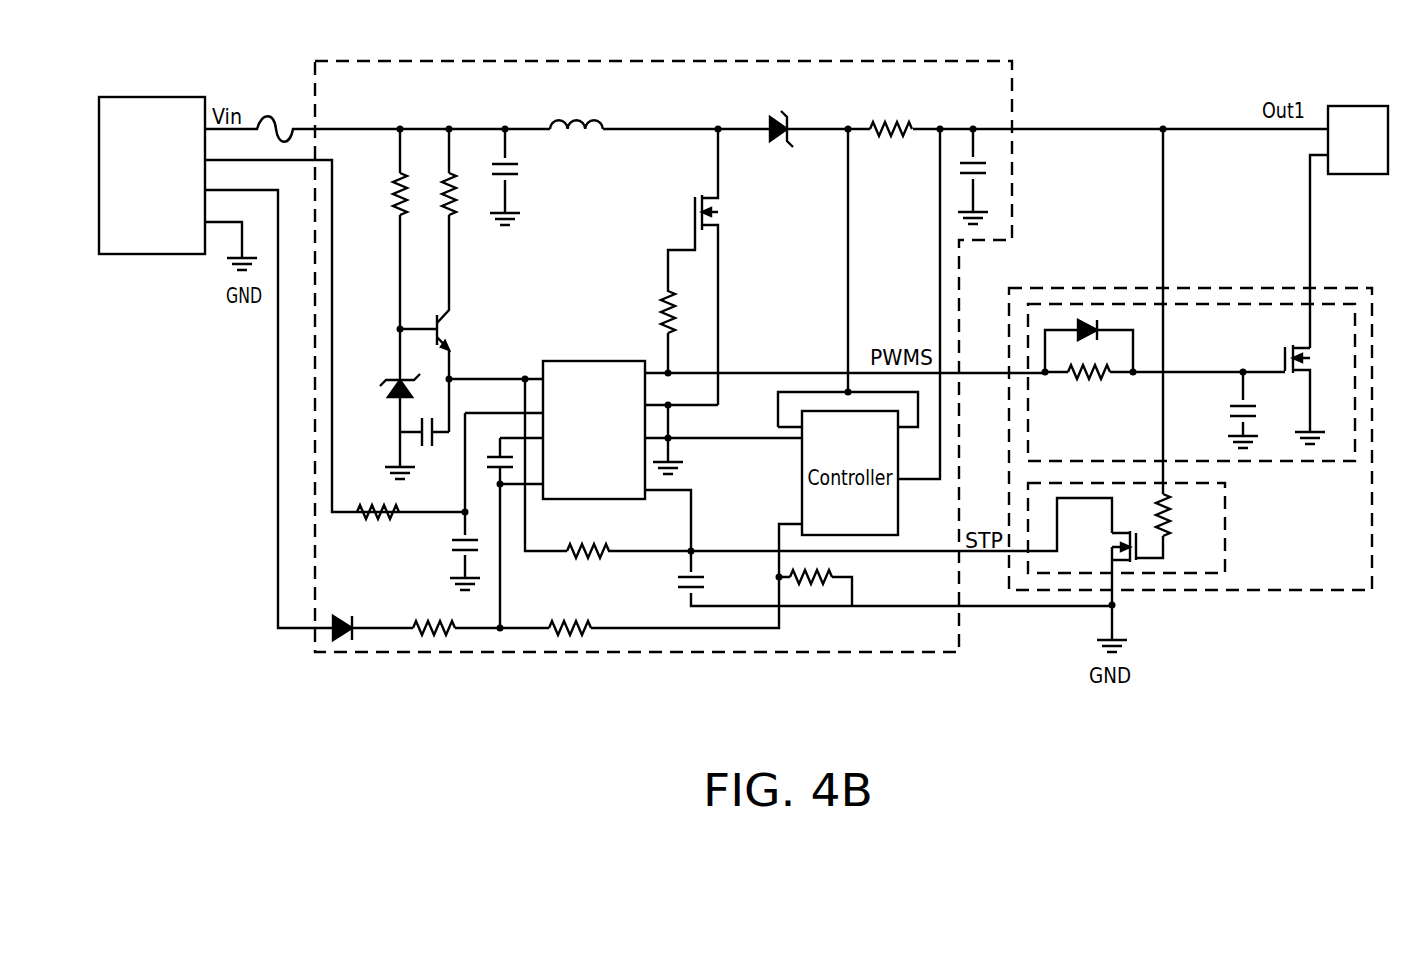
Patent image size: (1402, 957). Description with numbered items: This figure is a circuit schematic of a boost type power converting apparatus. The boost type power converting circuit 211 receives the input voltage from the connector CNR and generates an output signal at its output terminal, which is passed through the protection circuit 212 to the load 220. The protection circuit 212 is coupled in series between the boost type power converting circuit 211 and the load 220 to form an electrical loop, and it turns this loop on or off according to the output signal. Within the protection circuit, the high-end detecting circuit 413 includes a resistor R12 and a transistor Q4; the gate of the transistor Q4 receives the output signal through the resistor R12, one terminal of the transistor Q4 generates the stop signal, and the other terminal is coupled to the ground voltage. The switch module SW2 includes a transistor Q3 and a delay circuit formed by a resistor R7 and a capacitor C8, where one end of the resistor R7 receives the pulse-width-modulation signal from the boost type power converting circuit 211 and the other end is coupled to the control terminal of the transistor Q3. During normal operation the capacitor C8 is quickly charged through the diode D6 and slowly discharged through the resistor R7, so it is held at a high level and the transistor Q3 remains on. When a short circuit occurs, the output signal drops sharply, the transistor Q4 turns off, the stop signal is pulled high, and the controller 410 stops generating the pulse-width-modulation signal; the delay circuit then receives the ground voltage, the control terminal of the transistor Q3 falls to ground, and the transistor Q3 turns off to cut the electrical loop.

The boost type power converting circuit 211 is at (873, 656).
The protection circuit 212 is at (1352, 288).
The load 220 is at (1355, 105).
The controller 410 is at (596, 360).
The high-end detecting circuit 413 is at (1185, 575).
The switch module SW2 is at (1222, 302).
The connector CNR is at (170, 256).
The diode D6 is at (1089, 346).
The resistor R7 is at (1089, 389).
The capacitor C8 is at (1259, 410).
The transistor Q3 is at (1316, 394).
The transistor Q4 is at (1104, 591).
The resistor R12 is at (1172, 526).